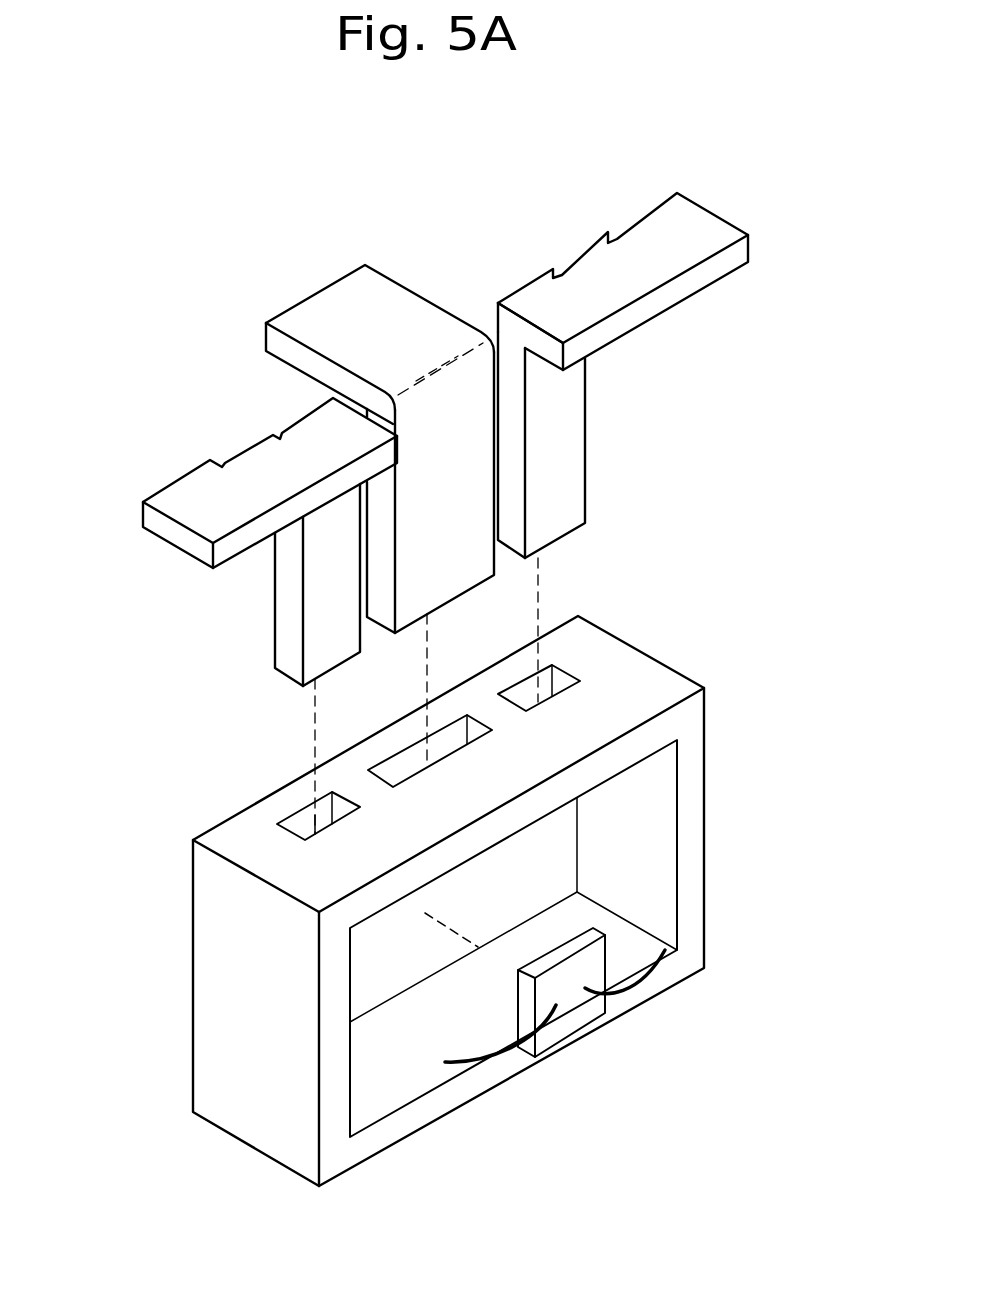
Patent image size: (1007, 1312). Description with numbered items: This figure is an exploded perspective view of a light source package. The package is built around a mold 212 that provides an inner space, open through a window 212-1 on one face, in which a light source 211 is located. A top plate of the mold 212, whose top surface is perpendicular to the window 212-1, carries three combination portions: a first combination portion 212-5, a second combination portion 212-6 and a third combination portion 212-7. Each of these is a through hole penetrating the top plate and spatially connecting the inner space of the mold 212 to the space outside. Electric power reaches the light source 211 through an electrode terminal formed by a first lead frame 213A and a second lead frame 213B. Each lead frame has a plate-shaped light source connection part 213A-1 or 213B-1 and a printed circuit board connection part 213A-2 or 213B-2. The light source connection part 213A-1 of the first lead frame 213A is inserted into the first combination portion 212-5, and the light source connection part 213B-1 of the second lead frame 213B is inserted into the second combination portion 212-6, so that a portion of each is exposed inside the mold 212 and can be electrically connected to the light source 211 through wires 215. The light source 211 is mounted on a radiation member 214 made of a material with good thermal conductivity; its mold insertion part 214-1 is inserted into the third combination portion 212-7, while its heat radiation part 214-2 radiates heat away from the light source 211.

The light source 211 is at (582, 1000).
The mold 212 is at (509, 918).
The window 212-1 is at (679, 847).
The first combination portion 212-5 is at (517, 687).
The second combination portion 212-6 is at (293, 817).
The third combination portion 212-7 is at (408, 752).
The first lead frame 213A is at (665, 447).
The light source connection part 213A-1 is at (568, 448).
The printed circuit board connection part 213A-2 is at (605, 333).
The second lead frame 213B is at (232, 584).
The light source connection part 213B-1 is at (333, 532).
The printed circuit board connection part 213B-2 is at (197, 497).
The radiation member 214 is at (380, 469).
The mold insertion part 214-1 is at (458, 420).
The heat radiation part 214-2 is at (357, 300).
The wires 215 is at (658, 980).